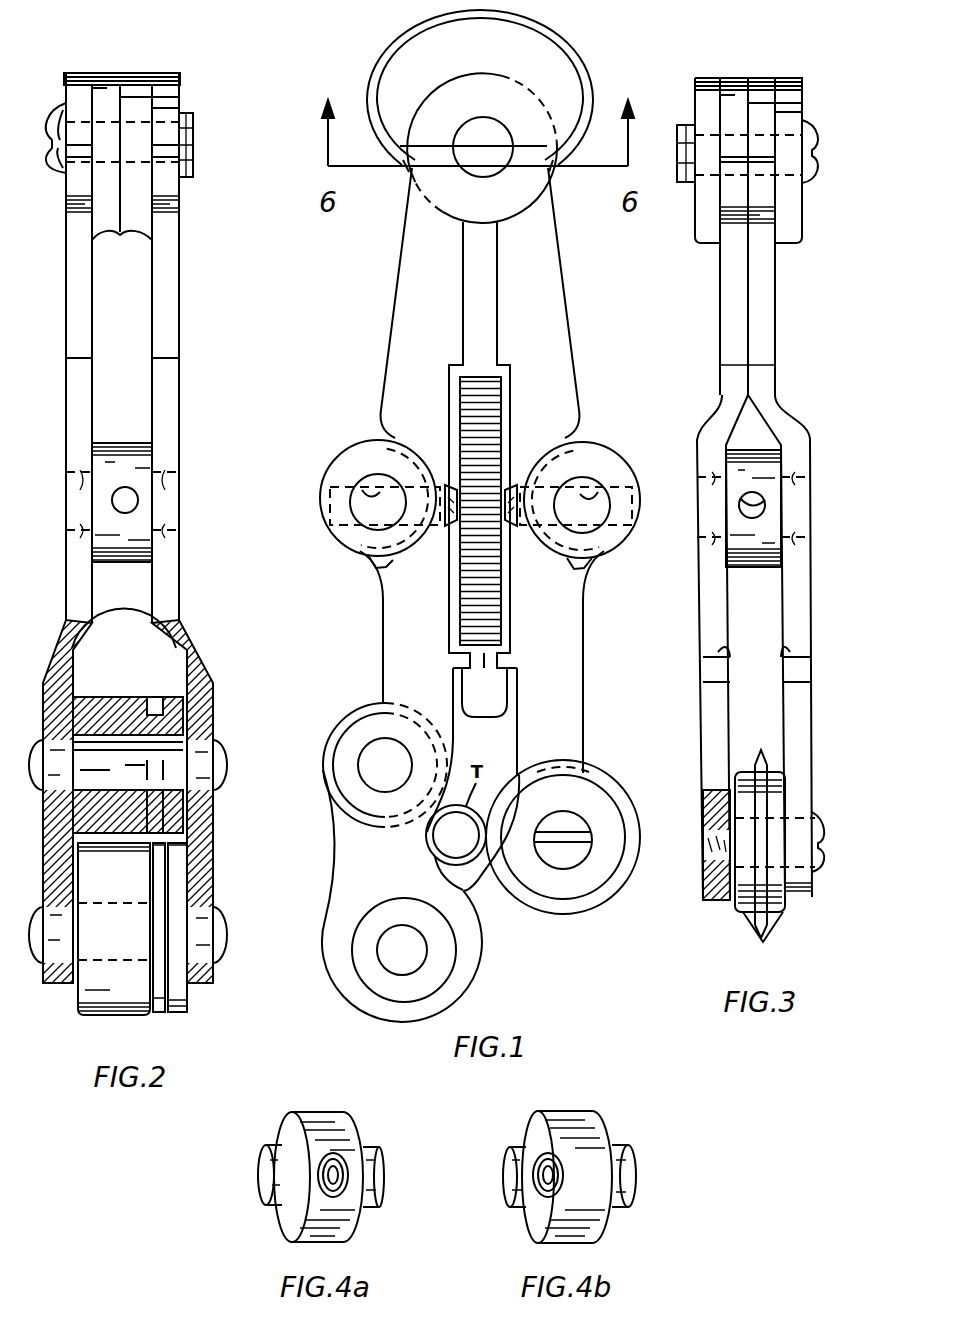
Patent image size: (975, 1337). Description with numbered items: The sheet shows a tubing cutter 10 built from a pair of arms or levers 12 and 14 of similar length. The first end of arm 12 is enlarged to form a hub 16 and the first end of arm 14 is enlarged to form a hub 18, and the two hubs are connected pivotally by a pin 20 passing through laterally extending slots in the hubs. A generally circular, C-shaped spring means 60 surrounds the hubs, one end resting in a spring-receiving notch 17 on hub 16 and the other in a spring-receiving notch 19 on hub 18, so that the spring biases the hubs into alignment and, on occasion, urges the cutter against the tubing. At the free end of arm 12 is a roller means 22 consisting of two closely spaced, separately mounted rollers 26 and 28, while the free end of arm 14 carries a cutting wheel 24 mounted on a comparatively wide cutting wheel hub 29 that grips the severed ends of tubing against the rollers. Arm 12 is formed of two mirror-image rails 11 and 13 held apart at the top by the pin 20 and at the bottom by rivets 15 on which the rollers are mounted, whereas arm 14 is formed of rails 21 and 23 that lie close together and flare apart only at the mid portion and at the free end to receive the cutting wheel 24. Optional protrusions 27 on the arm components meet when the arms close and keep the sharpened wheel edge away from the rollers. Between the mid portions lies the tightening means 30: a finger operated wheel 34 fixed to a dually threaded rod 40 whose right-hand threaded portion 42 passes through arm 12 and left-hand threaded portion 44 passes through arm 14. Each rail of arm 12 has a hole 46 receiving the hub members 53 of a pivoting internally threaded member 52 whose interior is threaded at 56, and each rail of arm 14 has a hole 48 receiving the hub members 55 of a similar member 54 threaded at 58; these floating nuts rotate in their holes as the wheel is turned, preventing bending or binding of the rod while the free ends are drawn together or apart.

In FIG. 1, the tubing cutter 10 is at (367, 372).
In FIG. 1, the rail 11 is at (377, 417).
In FIG. 2, the rail 11 is at (66, 331).
In FIG. 3, the rail 11 is at (795, 250).
In FIG. 1, the arm 12 is at (376, 320).
In FIG. 2, the rail 13 is at (180, 336).
In FIG. 3, the rail 13 is at (705, 250).
In FIG. 1, the arm 14 is at (701, 323).
In FIG. 1, the rivets 15 is at (370, 790).
In FIG. 2, the rivets 15 is at (228, 760).
In FIG. 1, the hub 16 is at (553, 127).
In FIG. 1, the spring-receiving notch 17 is at (552, 160).
In FIG. 2, the spring-receiving notch 17 is at (66, 120).
In FIG. 1, the hub 18 is at (408, 127).
In FIG. 1, the spring-receiving notch 19 is at (403, 165).
In FIG. 3, the spring-receiving notch 19 is at (728, 152).
In FIG. 1, the pin 20 is at (481, 117).
In FIG. 2, the pin 20 is at (54, 160).
In FIG. 3, the pin 20 is at (817, 173).
In FIG. 1, the rail 21 is at (577, 417).
In FIG. 2, the rail 21 is at (94, 242).
In FIG. 3, the rail 21 is at (778, 346).
In FIG. 1, the roller means 22 is at (312, 858).
In FIG. 2, the rail 23 is at (150, 242).
In FIG. 3, the rail 23 is at (720, 346).
In FIG. 1, the cutting wheel 24 is at (614, 897).
In FIG. 3, the cutting wheel 24 is at (770, 768).
In FIG. 1, the roller 26 is at (380, 703).
In FIG. 2, the roller 26 is at (123, 697).
In FIG. 1, the protrusion 27 is at (504, 713).
In FIG. 2, the protrusion 27 is at (154, 622).
In FIG. 3, the protrusion 27 is at (790, 650).
In FIG. 1, the roller 28 is at (472, 980).
In FIG. 2, the roller 28 is at (197, 1000).
In FIG. 1, the cutting wheel hub 29 is at (611, 797).
In FIG. 3, the cutting wheel hub 29 is at (762, 857).
In FIG. 1, the tightening means 30 is at (427, 557).
In FIG. 1, the finger operated wheel 34 is at (484, 673).
In FIG. 1, the rod 40 is at (333, 504).
In FIG. 3, the rod 40 is at (708, 511).
In FIG. 1, the threaded portion 42 is at (400, 438).
In FIG. 1, the threaded portion 44 is at (583, 437).
In FIG. 1, the hole 46 is at (362, 486).
In FIG. 2, the hole 46 is at (82, 480).
In FIG. 1, the hole 48 is at (607, 488).
In FIG. 3, the hole 48 is at (716, 478).
In FIG. 1, the pivoting internally threaded member 52 is at (372, 576).
In FIG. 2, the pivoting internally threaded member 52 is at (123, 443).
In FIG. 4a, the pivoting internally threaded member 52 is at (316, 1111).
In FIG. 1, the hub members 53 is at (352, 538).
In FIG. 2, the hub members 53 is at (82, 532).
In FIG. 4a, the hub members 53 is at (258, 1163).
In FIG. 1, the pivoting internally threaded member 54 is at (593, 581).
In FIG. 3, the pivoting internally threaded member 54 is at (758, 450).
In FIG. 4b, the pivoting internally threaded member 54 is at (563, 1110).
In FIG. 1, the hub members 55 is at (604, 542).
In FIG. 3, the hub members 55 is at (700, 540).
In FIG. 4b, the hub members 55 is at (506, 1160).
In FIG. 1, the threaded interior 56 is at (367, 451).
In FIG. 2, the threaded interior 56 is at (115, 497).
In FIG. 4a, the threaded interior 56 is at (347, 1192).
In FIG. 1, the threaded interior 58 is at (592, 451).
In FIG. 3, the threaded interior 58 is at (752, 492).
In FIG. 4b, the threaded interior 58 is at (545, 1195).
In FIG. 1, the spring means 60 is at (477, 22).